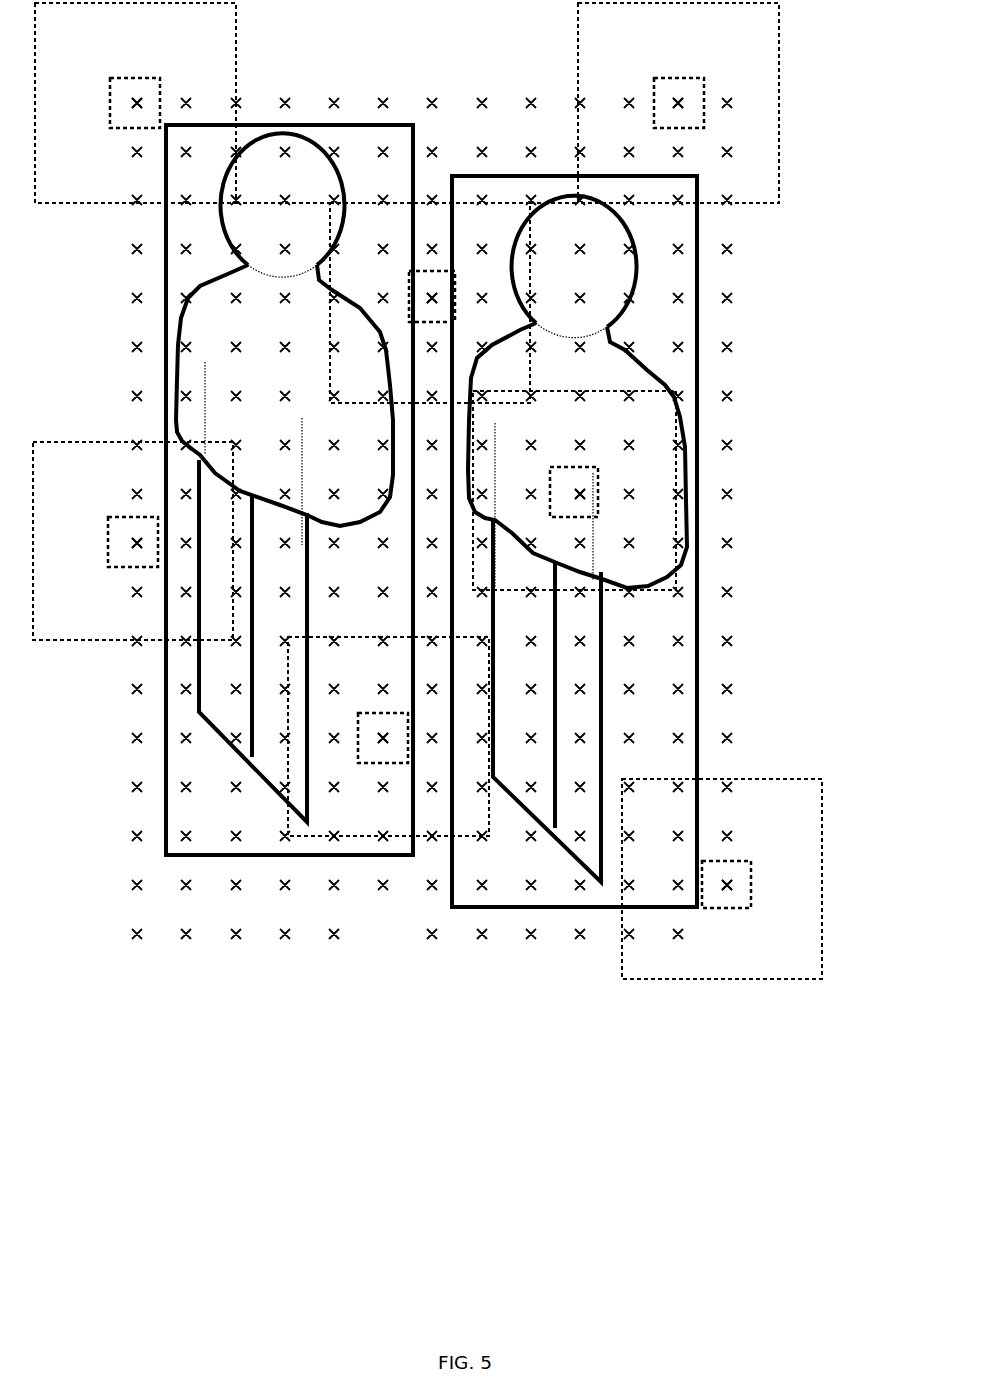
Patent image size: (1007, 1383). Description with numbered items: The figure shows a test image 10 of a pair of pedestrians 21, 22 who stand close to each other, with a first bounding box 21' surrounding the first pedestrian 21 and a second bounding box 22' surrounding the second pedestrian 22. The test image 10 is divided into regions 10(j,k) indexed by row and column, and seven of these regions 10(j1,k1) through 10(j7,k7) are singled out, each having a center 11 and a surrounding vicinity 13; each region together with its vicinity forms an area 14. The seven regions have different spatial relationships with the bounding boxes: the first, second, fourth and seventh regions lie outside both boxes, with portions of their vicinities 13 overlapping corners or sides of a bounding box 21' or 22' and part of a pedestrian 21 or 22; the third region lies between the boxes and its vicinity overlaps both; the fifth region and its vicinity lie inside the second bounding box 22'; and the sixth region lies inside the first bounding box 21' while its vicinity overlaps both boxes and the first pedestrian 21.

The test image 10 is at (108, 101).
The centers of the regions 11 is at (137, 96).
The vicinities of the regions 13 is at (200, 34).
The areas 14 is at (238, 28).
The first bounding box 21' is at (246, 490).
The second bounding box 22' is at (574, 486).
The first pedestrian 21 is at (246, 490).
The second pedestrian 22 is at (574, 486).